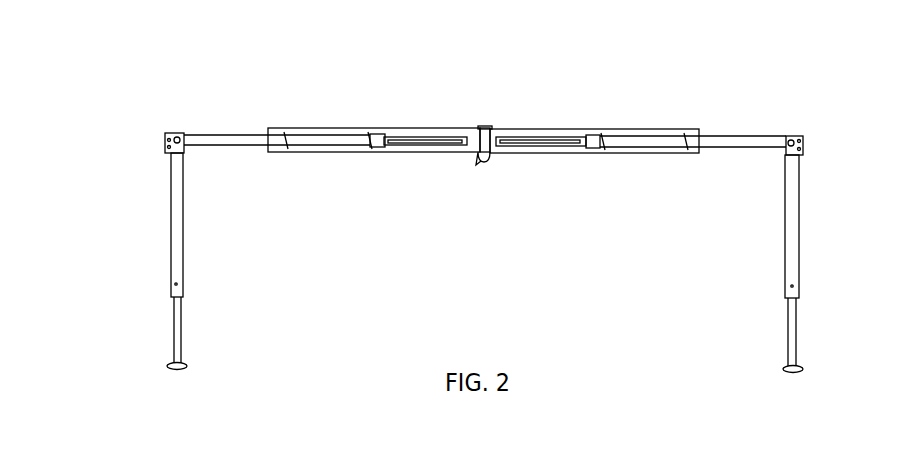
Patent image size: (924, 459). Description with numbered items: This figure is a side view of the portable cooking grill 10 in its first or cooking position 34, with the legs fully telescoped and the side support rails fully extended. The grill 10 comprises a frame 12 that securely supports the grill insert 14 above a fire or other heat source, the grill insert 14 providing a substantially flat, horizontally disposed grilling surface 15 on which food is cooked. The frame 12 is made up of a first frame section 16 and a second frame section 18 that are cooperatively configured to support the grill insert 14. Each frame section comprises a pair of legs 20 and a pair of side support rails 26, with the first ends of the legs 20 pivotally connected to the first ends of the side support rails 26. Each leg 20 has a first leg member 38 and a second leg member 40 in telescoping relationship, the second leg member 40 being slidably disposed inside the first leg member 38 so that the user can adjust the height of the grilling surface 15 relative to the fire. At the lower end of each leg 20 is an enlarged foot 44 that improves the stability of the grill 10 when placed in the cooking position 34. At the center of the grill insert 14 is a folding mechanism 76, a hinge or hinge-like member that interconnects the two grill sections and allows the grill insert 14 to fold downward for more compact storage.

The portable cooking grill 10 is at (726, 98).
The frame 12 is at (156, 157).
The grill insert 14 is at (275, 128).
The grilling surface 15 is at (379, 130).
The first frame section 16 is at (201, 160).
The second frame section 18 is at (777, 166).
The legs 20 is at (804, 186).
The side support rails 26 is at (735, 140).
The cooking position 34 is at (844, 123).
The first leg member 38 is at (178, 234).
The second leg member 40 is at (181, 309).
The foot 44 is at (800, 365).
The folding mechanism 76 is at (481, 164).